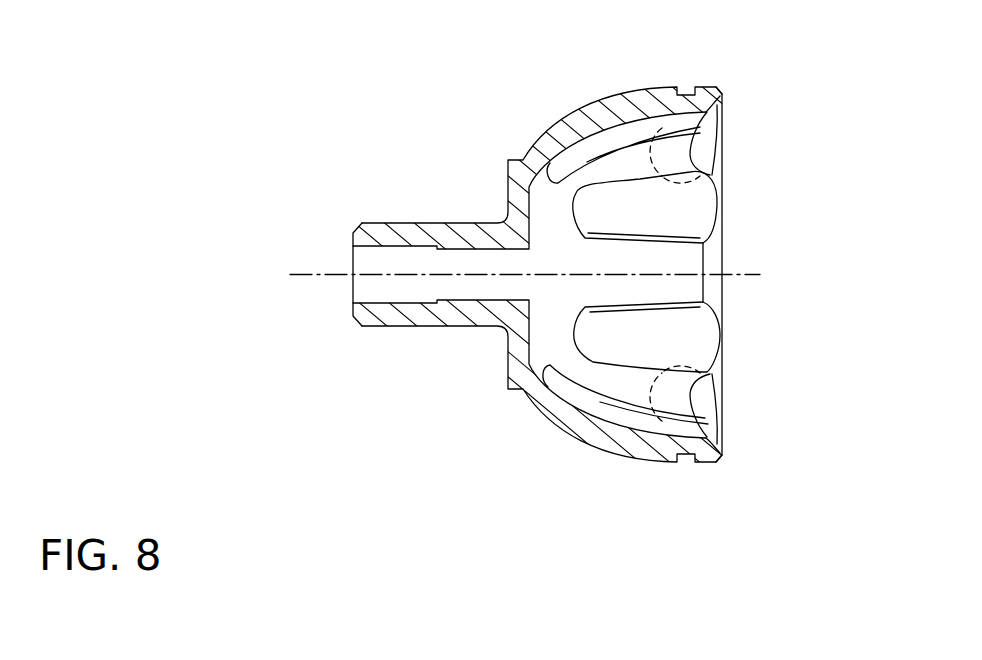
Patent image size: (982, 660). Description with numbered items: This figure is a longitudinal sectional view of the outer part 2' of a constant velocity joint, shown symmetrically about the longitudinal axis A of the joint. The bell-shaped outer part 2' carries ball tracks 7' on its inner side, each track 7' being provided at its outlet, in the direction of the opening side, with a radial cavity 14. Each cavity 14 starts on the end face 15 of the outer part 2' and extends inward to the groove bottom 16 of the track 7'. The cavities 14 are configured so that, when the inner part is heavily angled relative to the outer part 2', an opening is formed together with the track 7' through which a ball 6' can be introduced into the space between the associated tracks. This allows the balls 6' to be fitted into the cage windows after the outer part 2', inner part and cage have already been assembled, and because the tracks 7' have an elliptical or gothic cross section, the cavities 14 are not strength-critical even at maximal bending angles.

The outer part 2' is at (494, 275).
The track 7' is at (625, 218).
The ball 6' is at (749, 274).
The radial cavity 14 is at (720, 98).
The end face 15 is at (713, 251).
The groove bottom 16 is at (706, 117).
The longitudinal axis A is at (325, 276).